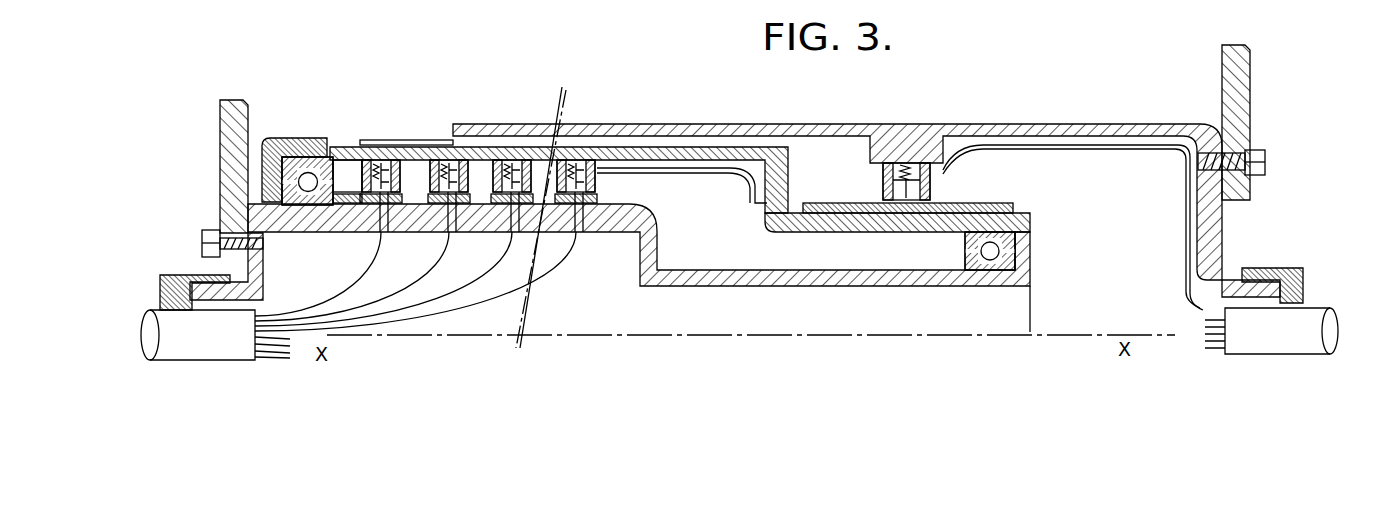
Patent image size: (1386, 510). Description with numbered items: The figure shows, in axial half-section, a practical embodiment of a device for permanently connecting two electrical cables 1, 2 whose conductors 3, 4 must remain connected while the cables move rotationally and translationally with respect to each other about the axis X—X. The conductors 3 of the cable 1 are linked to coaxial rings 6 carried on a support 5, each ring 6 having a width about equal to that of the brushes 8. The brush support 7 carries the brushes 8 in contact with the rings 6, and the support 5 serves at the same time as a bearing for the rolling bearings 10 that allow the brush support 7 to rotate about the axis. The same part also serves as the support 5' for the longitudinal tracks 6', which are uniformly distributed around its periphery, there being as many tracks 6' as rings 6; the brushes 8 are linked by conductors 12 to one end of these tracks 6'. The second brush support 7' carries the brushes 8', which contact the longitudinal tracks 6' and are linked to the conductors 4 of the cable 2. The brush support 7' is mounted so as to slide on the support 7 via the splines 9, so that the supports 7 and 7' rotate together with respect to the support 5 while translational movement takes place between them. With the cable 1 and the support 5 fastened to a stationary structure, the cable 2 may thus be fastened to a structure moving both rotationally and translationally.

The electrical cable 1 is at (185, 345).
The electrical cable 2 is at (1277, 333).
The conductors 3 is at (344, 328).
The conductors 4 is at (1222, 356).
The support 5 is at (610, 268).
The support 5' is at (897, 239).
The coaxial rings 6 is at (465, 232).
The longitudinal tracks 6' is at (934, 188).
The brush support 7 is at (559, 183).
The brush support 7' is at (866, 185).
The brushes 8 is at (489, 145).
The brushes 8' is at (938, 181).
The splines 9 is at (440, 143).
The rolling bearings 10 is at (310, 138).
The conductors 12 is at (731, 176).